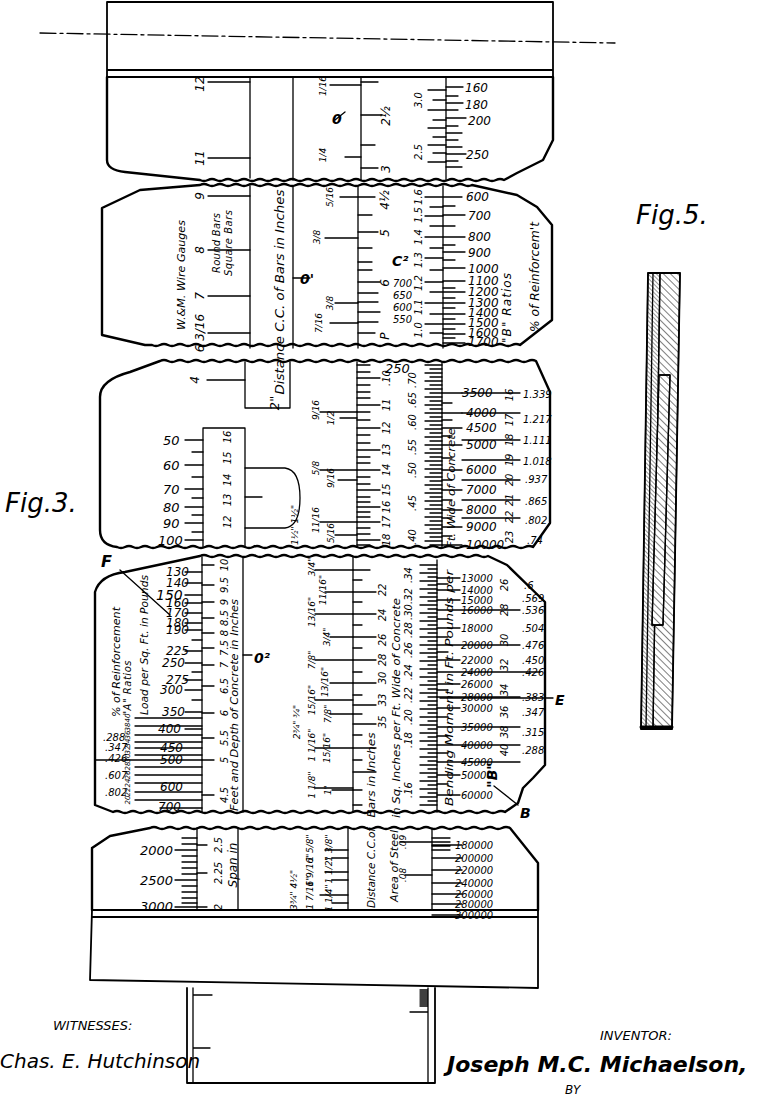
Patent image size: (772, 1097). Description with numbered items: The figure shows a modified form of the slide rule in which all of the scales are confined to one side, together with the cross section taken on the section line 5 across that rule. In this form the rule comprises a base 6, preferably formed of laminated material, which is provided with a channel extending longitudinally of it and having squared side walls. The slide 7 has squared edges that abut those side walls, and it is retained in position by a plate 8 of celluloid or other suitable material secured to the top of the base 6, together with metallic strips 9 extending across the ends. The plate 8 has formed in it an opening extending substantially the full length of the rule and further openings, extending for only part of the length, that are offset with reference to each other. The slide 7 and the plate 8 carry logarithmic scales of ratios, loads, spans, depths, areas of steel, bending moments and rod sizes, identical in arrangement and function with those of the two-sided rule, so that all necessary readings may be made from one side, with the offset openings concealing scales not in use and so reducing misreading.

In FIG. 3, the section line 5 is at (325, 40).
In FIG. 5, the base 6 is at (676, 516).
In FIG. 3, the slide 7 is at (190, 1012).
In FIG. 5, the slide 7 is at (664, 567).
In FIG. 5, the plate 8 is at (658, 345).
In FIG. 3, the metallic strips 9 is at (321, 495).
In FIG. 5, the metallic strips 9 is at (650, 355).